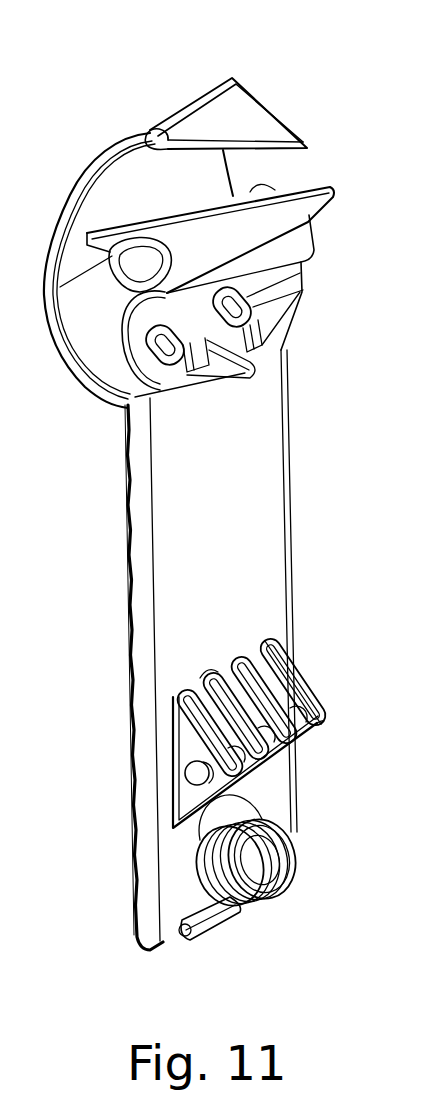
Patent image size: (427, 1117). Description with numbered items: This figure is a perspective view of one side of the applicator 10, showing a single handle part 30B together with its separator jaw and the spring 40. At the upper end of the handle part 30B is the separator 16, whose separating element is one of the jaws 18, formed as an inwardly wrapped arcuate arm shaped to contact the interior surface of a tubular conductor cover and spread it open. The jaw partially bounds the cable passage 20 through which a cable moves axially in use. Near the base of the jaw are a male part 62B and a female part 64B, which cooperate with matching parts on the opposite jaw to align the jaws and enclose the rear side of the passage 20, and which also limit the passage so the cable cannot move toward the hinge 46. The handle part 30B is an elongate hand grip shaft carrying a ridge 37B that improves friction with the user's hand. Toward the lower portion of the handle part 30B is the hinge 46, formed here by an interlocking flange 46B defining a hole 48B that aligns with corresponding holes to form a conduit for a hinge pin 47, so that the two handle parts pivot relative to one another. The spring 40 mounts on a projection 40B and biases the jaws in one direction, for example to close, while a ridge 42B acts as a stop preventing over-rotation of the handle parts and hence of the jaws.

The applicator 10 is at (72, 52).
The separator 16 is at (292, 183).
The jaws 18 is at (290, 207).
The cable passage 20 is at (307, 252).
The handle part 30B is at (145, 657).
The ridge 37B is at (128, 535).
The male part 62B is at (242, 383).
The female part 64B is at (228, 315).
The interlocking flange 46B is at (290, 690).
The hinge 46 is at (293, 682).
The hinge pin 47 is at (320, 708).
The hole 48B is at (205, 668).
The spring 40 is at (293, 848).
The projection 40B is at (243, 813).
The ridge 42B is at (212, 927).